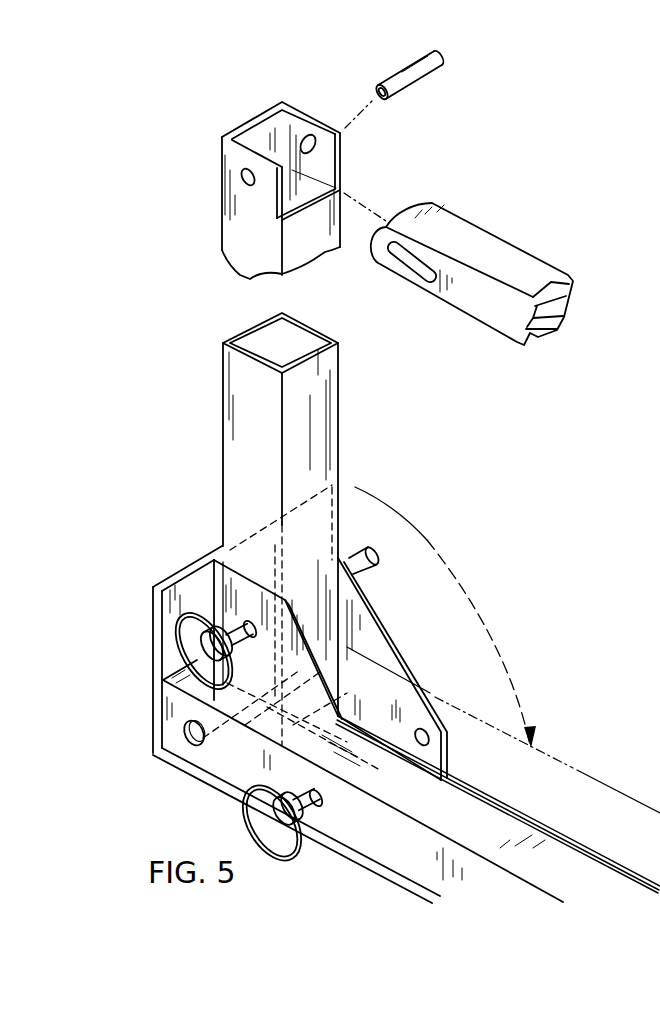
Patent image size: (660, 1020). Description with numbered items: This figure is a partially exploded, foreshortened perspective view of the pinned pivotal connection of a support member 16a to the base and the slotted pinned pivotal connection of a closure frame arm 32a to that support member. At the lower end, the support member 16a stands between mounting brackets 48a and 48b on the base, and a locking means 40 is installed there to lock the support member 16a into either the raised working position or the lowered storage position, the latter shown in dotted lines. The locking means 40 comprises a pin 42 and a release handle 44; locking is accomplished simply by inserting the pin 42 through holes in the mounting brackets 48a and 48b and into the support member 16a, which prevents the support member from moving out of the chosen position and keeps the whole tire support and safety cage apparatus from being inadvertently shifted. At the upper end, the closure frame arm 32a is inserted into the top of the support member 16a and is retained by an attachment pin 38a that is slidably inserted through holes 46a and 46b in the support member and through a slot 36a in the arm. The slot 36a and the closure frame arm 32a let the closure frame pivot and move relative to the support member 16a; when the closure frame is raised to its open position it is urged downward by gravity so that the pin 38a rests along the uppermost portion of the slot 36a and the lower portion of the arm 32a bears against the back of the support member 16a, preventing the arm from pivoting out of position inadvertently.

The support member 16a is at (313, 417).
The closure frame arm 32a is at (502, 256).
The slot 36a is at (412, 257).
The attachment pin 38a is at (423, 80).
The locking means 40 is at (235, 610).
The pin 42 is at (370, 577).
The release handle 44 is at (177, 639).
The hole 46a is at (310, 136).
The hole 46b is at (238, 181).
The mounting bracket 48a is at (398, 643).
The mounting bracket 48b is at (335, 680).